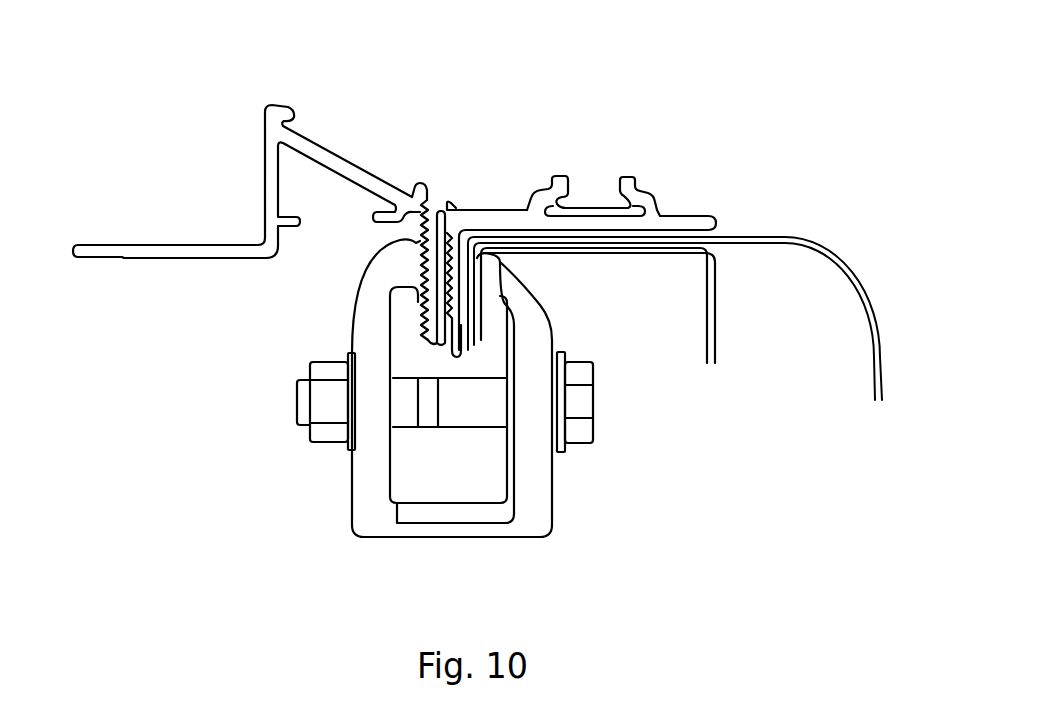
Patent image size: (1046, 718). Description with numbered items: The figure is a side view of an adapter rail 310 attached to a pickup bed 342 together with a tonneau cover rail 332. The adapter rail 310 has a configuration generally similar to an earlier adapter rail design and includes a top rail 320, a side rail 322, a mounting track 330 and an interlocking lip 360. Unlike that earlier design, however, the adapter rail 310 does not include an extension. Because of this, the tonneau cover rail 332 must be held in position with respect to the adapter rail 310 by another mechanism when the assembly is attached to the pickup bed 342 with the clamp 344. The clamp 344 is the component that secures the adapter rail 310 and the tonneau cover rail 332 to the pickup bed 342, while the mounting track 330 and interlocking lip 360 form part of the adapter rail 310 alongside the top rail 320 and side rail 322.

The adapter rail 310 is at (455, 146).
The top rail 320 is at (708, 218).
The side rail 322 is at (458, 335).
The mounting track 330 is at (640, 190).
The tonneau cover rail 332 is at (177, 312).
The pickup bed 342 is at (775, 250).
The clamp 344 is at (365, 502).
The interlocking lip 360 is at (445, 206).